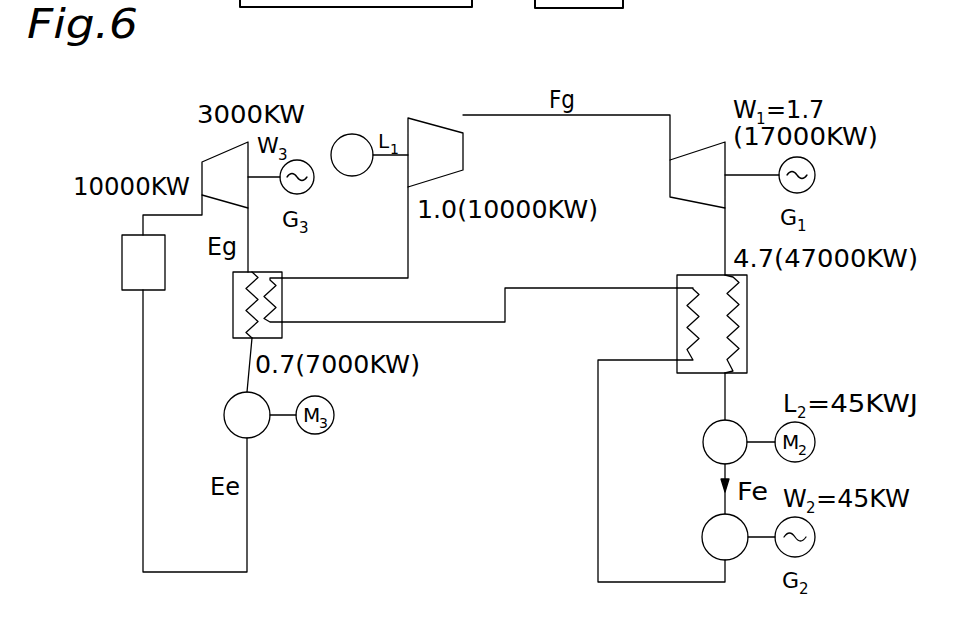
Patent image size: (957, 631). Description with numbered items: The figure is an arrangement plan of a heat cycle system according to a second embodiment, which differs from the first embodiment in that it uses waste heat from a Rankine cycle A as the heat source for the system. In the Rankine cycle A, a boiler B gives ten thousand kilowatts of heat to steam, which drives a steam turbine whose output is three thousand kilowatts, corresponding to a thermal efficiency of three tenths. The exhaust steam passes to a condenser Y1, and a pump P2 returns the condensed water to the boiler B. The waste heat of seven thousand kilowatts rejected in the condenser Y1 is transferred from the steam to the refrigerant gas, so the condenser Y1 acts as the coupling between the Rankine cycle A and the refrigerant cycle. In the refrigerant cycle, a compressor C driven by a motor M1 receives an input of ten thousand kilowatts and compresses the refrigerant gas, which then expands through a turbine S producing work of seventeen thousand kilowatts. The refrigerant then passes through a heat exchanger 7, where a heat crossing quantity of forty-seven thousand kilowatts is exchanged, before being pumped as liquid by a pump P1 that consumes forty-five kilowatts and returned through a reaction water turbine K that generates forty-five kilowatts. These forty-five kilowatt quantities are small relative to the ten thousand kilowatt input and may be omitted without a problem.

The heat exchanger 7 is at (747, 360).
The Rankine cycle A is at (190, 143).
The boiler B is at (143, 262).
The compressor C is at (435, 152).
The turbine S is at (697, 175).
The water turbine K is at (725, 537).
The pump P1 is at (725, 442).
The pump P2 is at (247, 415).
The condenser Y1 is at (259, 292).
The motor M1 is at (352, 155).